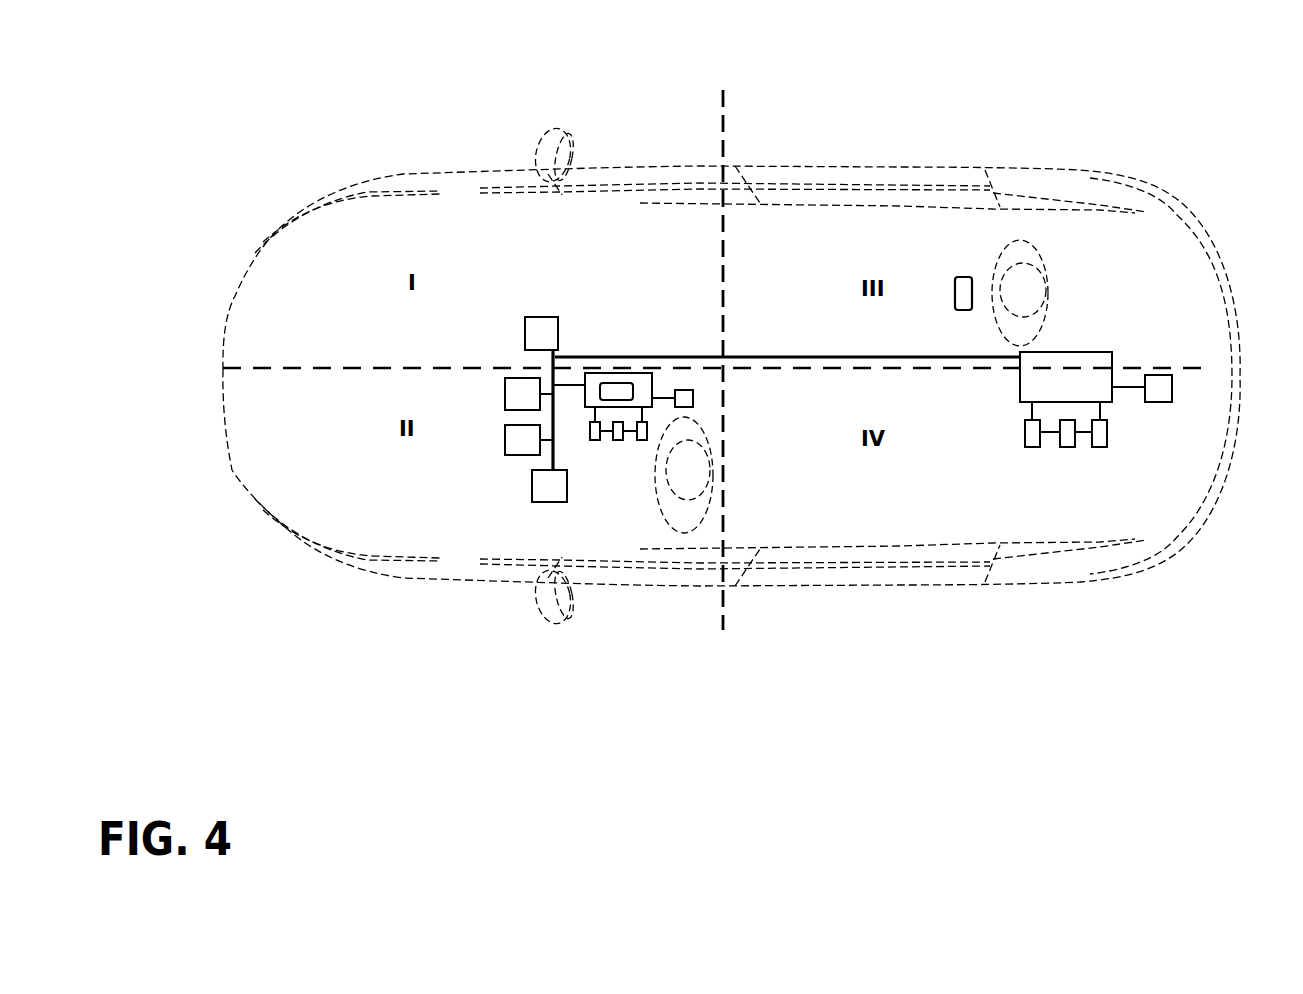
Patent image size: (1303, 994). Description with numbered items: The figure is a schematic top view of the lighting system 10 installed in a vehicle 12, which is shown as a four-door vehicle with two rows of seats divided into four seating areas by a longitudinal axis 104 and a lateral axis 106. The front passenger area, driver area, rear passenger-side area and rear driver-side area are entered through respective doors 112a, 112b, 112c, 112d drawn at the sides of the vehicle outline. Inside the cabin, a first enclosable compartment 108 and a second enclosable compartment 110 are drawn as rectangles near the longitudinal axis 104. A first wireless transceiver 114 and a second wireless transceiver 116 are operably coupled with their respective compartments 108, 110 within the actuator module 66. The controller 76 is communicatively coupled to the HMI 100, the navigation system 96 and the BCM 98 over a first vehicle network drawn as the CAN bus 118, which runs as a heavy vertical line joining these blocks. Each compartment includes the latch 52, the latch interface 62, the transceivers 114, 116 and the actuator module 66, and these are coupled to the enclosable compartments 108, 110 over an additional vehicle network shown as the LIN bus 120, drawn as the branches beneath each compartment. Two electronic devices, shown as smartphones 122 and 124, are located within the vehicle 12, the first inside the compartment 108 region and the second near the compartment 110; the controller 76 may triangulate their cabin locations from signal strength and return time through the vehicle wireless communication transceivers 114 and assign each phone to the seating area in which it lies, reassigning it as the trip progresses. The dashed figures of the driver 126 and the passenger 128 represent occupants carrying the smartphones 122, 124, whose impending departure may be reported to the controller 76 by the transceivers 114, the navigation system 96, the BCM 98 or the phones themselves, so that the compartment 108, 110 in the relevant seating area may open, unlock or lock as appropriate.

The vehicle system 10 is at (1088, 102).
The vehicle 12 is at (245, 207).
The latch 52 is at (618, 441).
The latch interface 62 is at (595, 441).
The actuator module 66 is at (642, 441).
The controller 76 is at (538, 322).
The navigation system 96 is at (505, 442).
The BCM 98 is at (545, 503).
The HMI 100 is at (505, 397).
The longitudinal axis 104 is at (1178, 364).
The lateral axis 106 is at (721, 122).
The first enclosable compartment 108 is at (624, 376).
The second enclosable compartment 110 is at (1076, 372).
The door 112a is at (610, 170).
The door 112b is at (615, 572).
The door 112c is at (880, 165).
The door 112d is at (880, 573).
The first wireless transceiver 114 is at (694, 398).
The second wireless transceiver 116 is at (1158, 396).
The CAN bus 118 is at (530, 464).
The LIN bus 120 is at (591, 418).
The smartphone 122 is at (622, 392).
The smartphone 124 is at (963, 280).
The driver 126 is at (757, 588).
The passenger 128 is at (1047, 297).